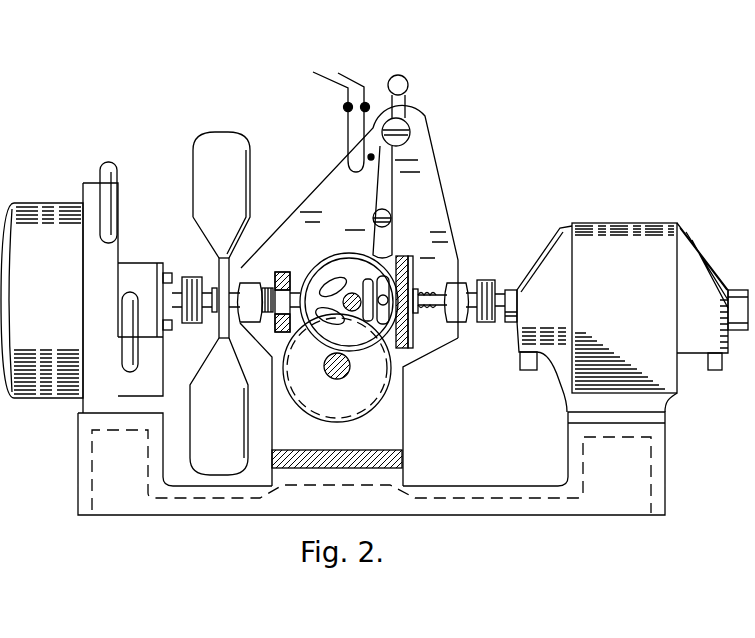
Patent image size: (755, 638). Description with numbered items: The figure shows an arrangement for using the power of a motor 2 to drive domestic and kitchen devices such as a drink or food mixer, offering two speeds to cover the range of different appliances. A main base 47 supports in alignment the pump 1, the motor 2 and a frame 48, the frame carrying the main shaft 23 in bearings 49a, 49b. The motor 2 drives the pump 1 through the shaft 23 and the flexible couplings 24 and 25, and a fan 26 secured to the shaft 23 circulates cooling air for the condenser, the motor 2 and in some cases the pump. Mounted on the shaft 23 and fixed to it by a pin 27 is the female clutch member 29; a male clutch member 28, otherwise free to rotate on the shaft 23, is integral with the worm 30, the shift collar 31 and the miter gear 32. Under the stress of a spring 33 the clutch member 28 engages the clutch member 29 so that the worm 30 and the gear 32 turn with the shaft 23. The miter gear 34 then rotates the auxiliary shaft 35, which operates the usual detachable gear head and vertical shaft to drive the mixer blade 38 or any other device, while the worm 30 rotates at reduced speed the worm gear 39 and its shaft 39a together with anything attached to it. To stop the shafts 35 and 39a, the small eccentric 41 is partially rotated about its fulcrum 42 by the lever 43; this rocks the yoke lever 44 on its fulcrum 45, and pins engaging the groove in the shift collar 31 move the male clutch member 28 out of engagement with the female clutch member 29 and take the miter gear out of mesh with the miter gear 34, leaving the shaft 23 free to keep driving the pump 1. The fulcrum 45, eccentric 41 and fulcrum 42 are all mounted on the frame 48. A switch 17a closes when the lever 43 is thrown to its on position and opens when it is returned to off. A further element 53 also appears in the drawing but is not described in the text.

The pump 1 is at (44, 204).
The motor 2 is at (652, 223).
The switch 17a is at (346, 168).
The shaft 23 is at (427, 320).
The flexible coupling 24 is at (487, 283).
The flexible coupling 25 is at (208, 268).
The fan 26 is at (252, 180).
The pin 27 is at (266, 287).
The male clutch member 28 is at (336, 268).
The female clutch member 29 is at (293, 262).
The worm 30 is at (374, 217).
The shift collar 31 is at (390, 268).
The miter gear 32 is at (409, 284).
The spring 33 is at (419, 293).
The miter gear 34 is at (323, 335).
The shaft 35 is at (358, 312).
The mixer blade 38 is at (8, 486).
The worm gear 39 is at (330, 405).
The shaft 39a is at (348, 379).
The eccentric 41 is at (412, 130).
The fulcrum 42 is at (409, 138).
The lever 43 is at (400, 106).
The yoke lever 44 is at (384, 192).
The fulcrum 45 is at (389, 215).
The main base 47 is at (113, 502).
The frame 48 is at (390, 425).
The bearing 49a is at (242, 282).
The bearing 49b is at (458, 325).
The element 53 is at (11, 542).